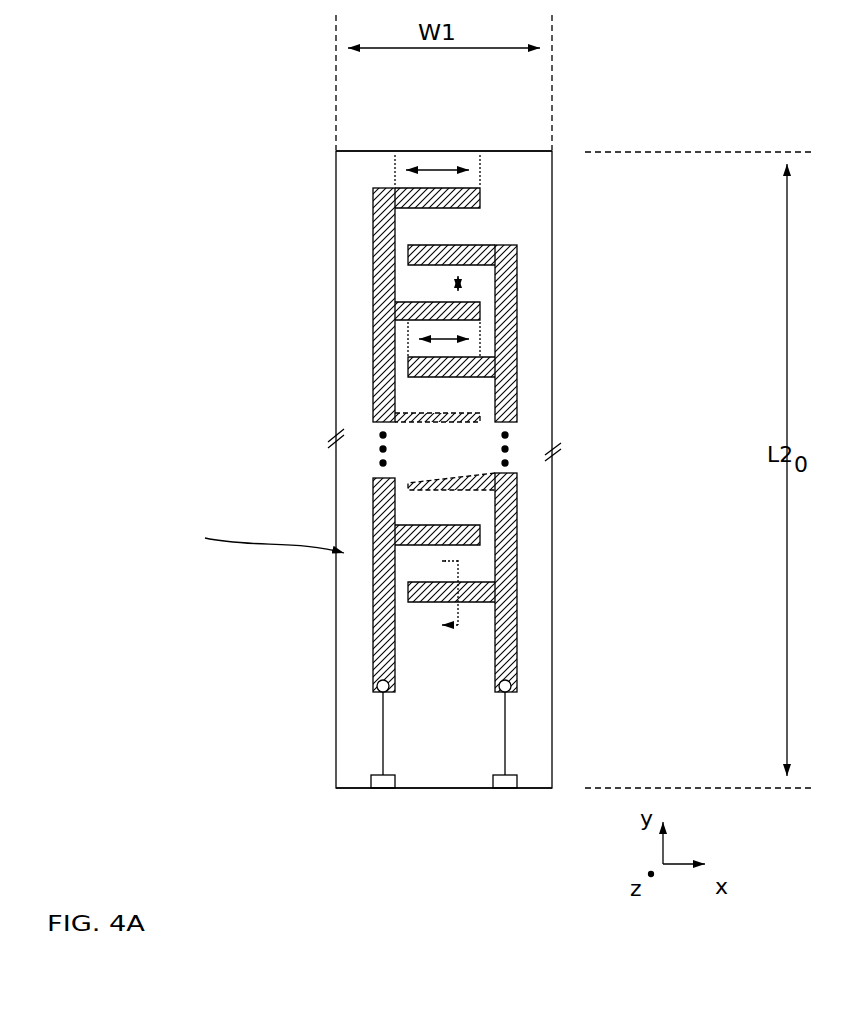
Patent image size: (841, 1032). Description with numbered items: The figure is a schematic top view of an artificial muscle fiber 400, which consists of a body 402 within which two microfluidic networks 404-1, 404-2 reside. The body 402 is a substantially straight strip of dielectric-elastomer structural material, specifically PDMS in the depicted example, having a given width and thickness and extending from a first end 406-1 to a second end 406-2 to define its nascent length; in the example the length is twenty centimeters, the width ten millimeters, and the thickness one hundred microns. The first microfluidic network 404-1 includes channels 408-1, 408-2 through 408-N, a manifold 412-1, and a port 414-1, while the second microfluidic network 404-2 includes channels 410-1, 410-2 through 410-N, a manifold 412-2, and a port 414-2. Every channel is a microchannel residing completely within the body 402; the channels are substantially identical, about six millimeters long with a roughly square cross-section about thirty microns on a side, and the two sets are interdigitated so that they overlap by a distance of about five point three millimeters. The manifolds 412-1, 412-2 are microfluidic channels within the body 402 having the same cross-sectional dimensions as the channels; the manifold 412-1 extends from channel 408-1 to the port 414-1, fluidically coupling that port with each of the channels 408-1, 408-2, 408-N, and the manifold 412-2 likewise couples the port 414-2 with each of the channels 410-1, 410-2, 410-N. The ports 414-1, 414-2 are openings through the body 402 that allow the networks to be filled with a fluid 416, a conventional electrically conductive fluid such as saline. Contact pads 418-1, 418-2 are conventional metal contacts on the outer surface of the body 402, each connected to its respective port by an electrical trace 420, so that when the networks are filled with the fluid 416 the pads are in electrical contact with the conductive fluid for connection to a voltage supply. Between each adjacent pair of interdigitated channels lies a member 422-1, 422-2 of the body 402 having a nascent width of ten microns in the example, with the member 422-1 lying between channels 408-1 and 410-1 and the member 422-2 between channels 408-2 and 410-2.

The fiber 400 is at (172, 153).
The body 402 is at (552, 262).
The microfluidic network 404-1 is at (348, 306).
The microfluidic network 404-2 is at (532, 393).
The first end 406-1 is at (434, 122).
The second end 406-2 is at (436, 846).
The channel 408-1 is at (423, 207).
The channel 408-2 is at (427, 304).
The channel 408-N is at (432, 547).
The channel 410-1 is at (473, 247).
The channel 410-2 is at (455, 378).
The channel 410-N is at (460, 602).
The manifold 412-1 is at (378, 507).
The manifold 412-2 is at (520, 540).
The port 414-1 is at (376, 689).
The port 414-2 is at (512, 689).
The fluid 416 is at (372, 656).
The contact pad 418-1 is at (386, 790).
The contact pad 418-2 is at (504, 790).
The electrical trace 420 is at (504, 716).
The member 422-1 is at (478, 220).
The member 422-2 is at (482, 289).